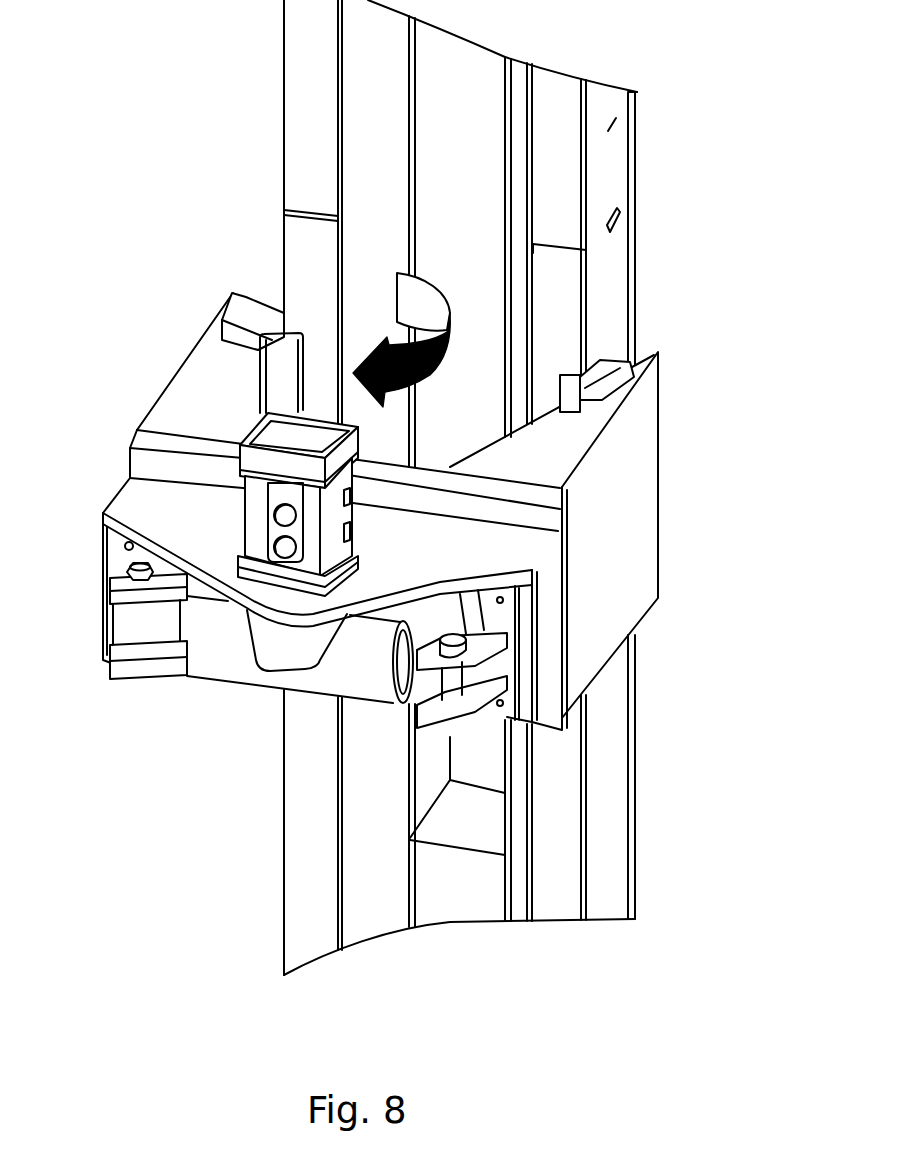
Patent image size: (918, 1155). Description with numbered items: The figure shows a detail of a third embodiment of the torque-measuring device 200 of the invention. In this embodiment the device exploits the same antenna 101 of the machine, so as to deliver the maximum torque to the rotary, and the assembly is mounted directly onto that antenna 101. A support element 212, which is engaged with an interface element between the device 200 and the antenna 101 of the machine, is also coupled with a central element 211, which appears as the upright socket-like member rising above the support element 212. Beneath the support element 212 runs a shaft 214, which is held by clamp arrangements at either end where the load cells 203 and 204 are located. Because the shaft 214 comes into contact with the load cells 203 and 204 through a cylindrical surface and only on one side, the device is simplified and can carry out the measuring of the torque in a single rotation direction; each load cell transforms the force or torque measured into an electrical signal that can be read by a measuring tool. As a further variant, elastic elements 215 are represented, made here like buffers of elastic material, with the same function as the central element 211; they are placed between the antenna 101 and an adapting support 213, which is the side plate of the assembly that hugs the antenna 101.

The antenna 101 is at (605, 151).
The device 200 is at (395, 509).
The load cell 203 is at (127, 566).
The load cell 204 is at (470, 647).
The central element 211 is at (260, 462).
The support element 212 is at (507, 548).
The adapting support 213 is at (627, 487).
The shaft 214 is at (140, 615).
The elastic elements 215 is at (255, 327).